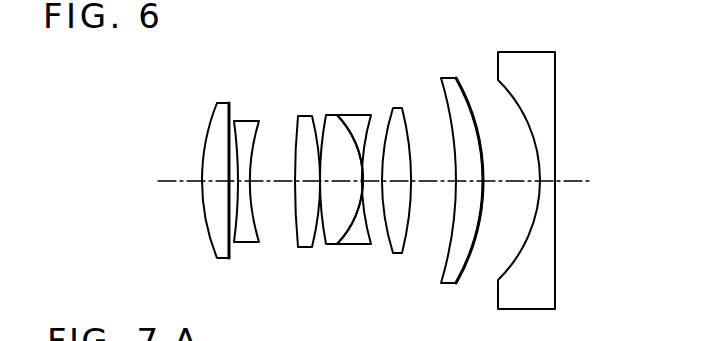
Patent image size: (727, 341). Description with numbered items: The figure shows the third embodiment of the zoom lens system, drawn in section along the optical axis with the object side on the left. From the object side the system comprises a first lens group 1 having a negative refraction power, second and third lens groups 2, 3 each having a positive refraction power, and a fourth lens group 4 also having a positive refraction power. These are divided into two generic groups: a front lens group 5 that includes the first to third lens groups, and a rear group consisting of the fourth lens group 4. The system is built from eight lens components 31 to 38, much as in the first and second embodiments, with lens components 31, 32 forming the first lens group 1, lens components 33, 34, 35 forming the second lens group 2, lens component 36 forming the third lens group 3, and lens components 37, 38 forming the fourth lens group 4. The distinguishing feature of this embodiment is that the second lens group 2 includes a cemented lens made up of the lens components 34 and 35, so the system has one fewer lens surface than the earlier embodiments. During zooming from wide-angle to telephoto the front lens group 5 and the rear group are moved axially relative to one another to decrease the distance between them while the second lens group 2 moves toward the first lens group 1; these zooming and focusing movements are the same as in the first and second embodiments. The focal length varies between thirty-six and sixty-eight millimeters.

The first lens group 1 is at (234, 169).
The second lens group 2 is at (332, 176).
The third lens group 3 is at (398, 170).
The fourth lens group 4 is at (498, 177).
The front lens group 5 is at (308, 187).
The lens component 31 is at (226, 101).
The lens component 32 is at (251, 119).
The lens component 33 is at (304, 115).
The lens component 34 is at (332, 114).
The lens component 35 is at (355, 114).
The lens component 36 is at (397, 106).
The lens component 37 is at (446, 77).
The lens component 38 is at (497, 53).